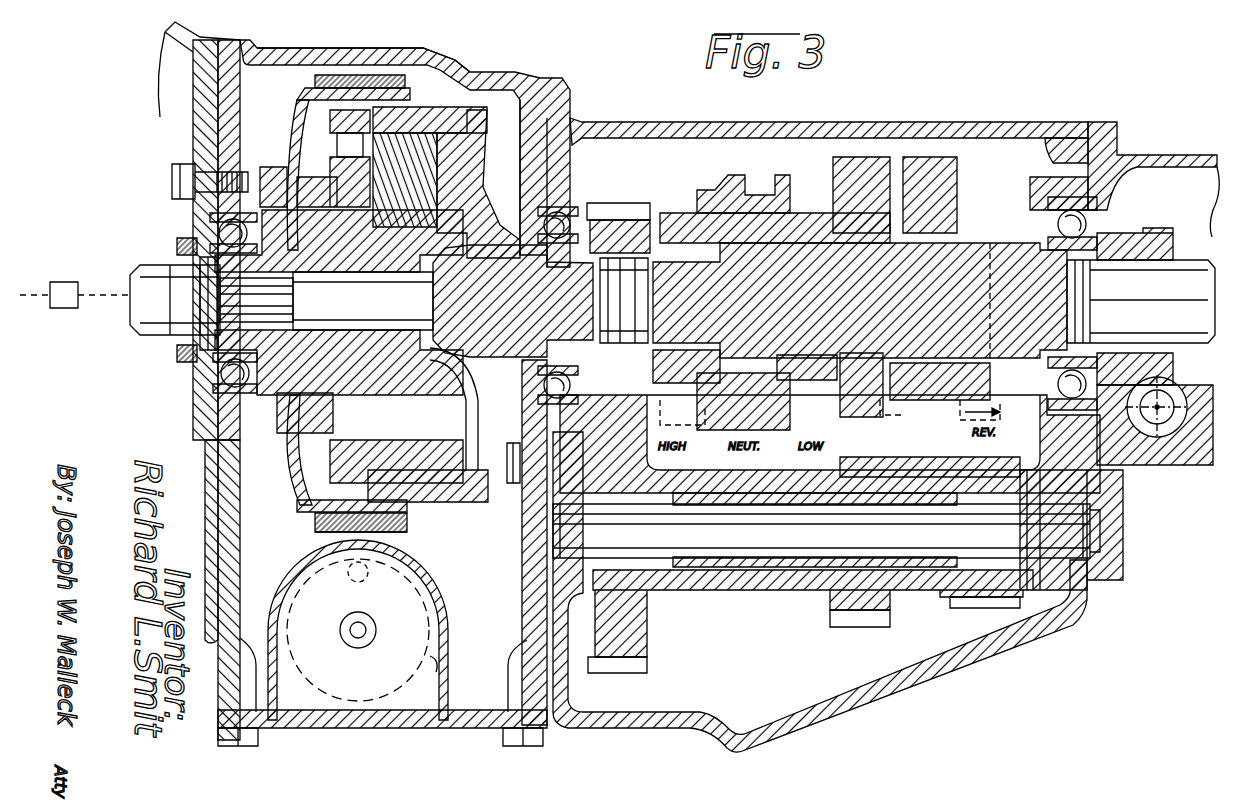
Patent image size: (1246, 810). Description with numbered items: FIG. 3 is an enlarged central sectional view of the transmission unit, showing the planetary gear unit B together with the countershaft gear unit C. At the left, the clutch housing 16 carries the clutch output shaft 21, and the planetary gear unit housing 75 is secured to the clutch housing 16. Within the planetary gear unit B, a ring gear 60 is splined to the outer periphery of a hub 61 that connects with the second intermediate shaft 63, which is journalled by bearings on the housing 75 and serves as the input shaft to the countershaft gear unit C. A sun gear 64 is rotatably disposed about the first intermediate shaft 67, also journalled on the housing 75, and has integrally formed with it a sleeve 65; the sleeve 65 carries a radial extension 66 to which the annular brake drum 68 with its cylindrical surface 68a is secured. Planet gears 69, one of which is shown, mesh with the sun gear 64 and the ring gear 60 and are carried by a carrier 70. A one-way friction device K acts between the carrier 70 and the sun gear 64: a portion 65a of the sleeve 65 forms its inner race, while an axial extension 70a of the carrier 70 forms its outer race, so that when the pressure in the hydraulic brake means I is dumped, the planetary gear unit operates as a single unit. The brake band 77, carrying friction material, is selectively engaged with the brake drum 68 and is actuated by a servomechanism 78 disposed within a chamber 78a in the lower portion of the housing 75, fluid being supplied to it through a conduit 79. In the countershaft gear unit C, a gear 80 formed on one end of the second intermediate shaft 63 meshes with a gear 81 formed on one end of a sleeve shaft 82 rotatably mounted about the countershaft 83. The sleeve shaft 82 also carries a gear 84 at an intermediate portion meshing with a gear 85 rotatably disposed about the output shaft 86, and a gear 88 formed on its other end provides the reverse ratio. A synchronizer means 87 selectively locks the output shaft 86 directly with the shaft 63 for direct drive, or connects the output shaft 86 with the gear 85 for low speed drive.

The clutch housing 16 is at (190, 136).
The clutch output shaft 21 is at (50, 290).
The first intermediate shaft 67 is at (140, 284).
The planetary gear unit housing 75 is at (290, 42).
The brake band 77 is at (386, 76).
The carrier 70 is at (343, 117).
The one-way friction device K is at (318, 192).
The planet gears 69 is at (414, 135).
The hub 61 is at (516, 236).
The planetary gear unit B is at (500, 62).
The synchronizer means 87 is at (758, 170).
The gear 85 is at (866, 158).
The countershaft gear unit C is at (1008, 122).
The output shaft 86 is at (1187, 260).
The gear 80 is at (614, 205).
The second intermediate shaft 63 is at (522, 313).
The sleeve portion 65a is at (325, 245).
The sleeve 65 is at (375, 240).
The sun gear 64 is at (462, 392).
The radial extension 66 is at (267, 447).
The axial extension 70a is at (336, 440).
The ring gear 60 is at (446, 474).
The annular brake drum 68 is at (316, 520).
The cylindrical surface 68a is at (412, 527).
The conduit 79 is at (364, 584).
The servomechanism 78 is at (413, 637).
The chamber 78a is at (423, 660).
The hydraulic brake means I is at (314, 714).
The gear 81 is at (647, 672).
The sleeve shaft 82 is at (747, 578).
The gear 84 is at (860, 628).
The gear 88 is at (980, 608).
The countershaft 83 is at (1087, 530).